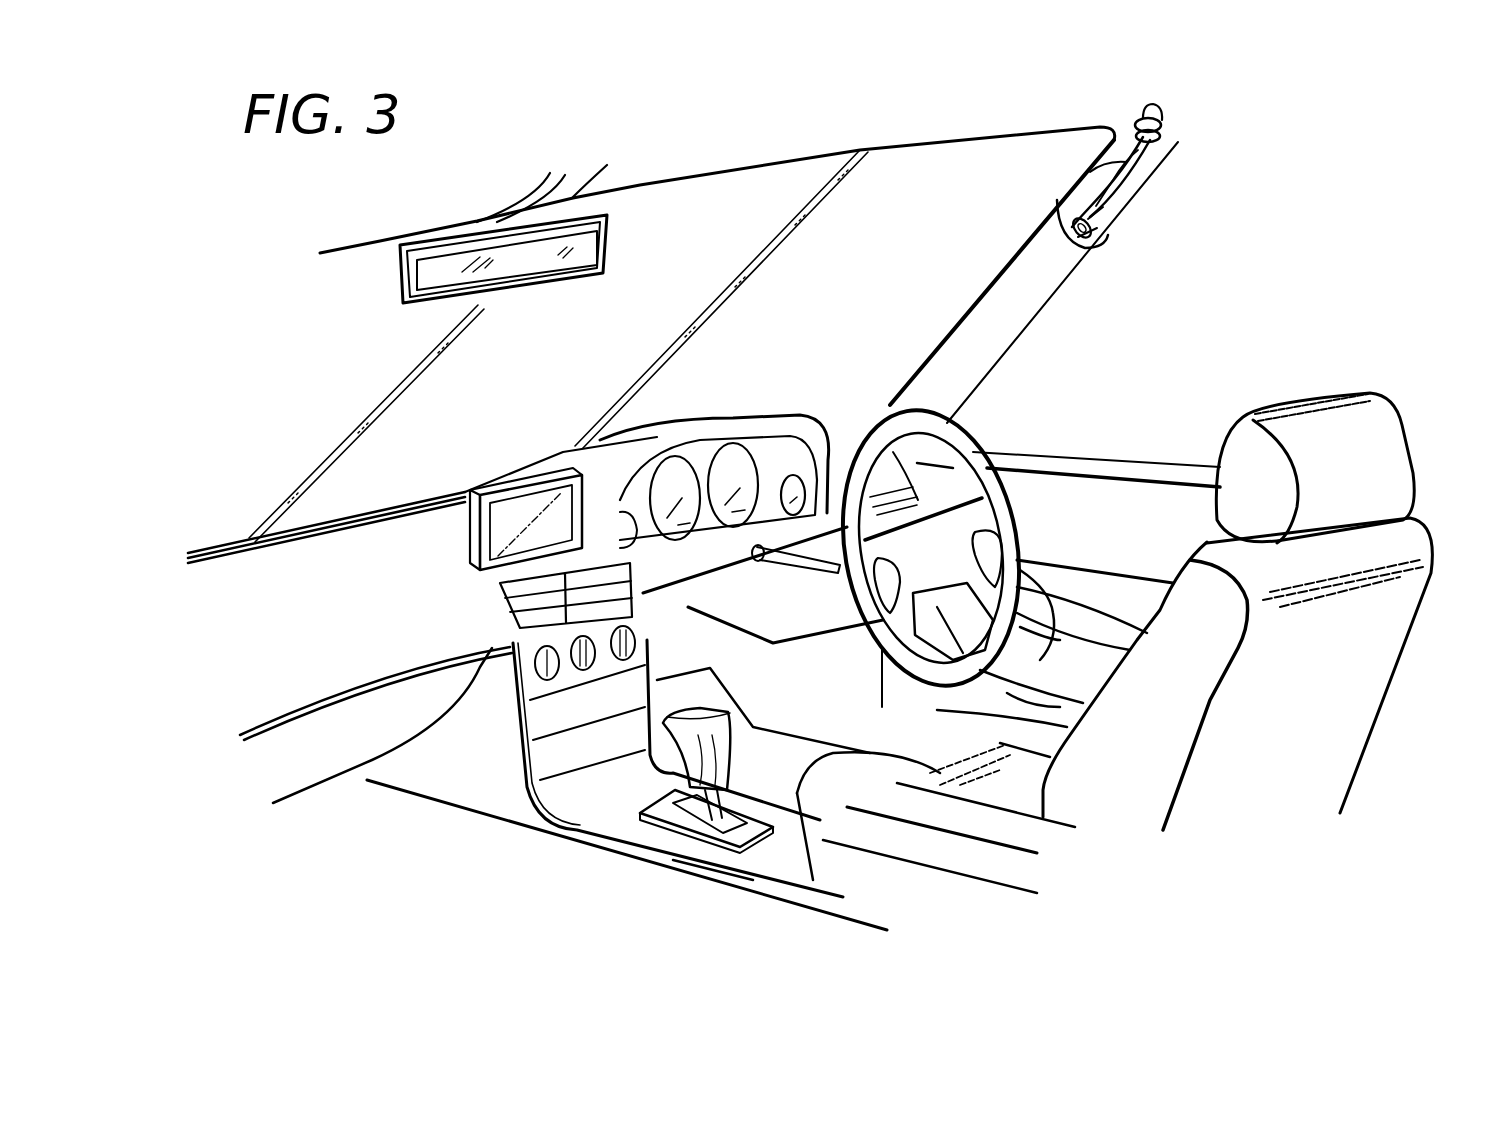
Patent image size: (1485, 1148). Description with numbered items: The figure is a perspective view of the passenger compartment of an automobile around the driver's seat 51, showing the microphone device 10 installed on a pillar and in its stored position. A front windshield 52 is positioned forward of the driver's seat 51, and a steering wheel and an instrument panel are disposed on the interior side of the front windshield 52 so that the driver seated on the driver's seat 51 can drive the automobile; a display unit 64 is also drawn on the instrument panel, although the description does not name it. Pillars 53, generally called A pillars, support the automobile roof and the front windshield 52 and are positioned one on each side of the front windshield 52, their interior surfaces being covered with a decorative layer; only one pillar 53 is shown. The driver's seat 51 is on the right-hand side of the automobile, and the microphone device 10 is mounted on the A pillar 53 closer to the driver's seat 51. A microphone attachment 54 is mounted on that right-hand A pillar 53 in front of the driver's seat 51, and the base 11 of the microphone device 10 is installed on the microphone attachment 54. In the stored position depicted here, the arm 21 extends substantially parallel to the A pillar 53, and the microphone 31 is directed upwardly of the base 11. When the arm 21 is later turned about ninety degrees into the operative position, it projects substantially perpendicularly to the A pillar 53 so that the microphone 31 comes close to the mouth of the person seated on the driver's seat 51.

The microphone device 10 is at (1150, 156).
The base 11 is at (1100, 212).
The arm 21 is at (1110, 160).
The microphone 31 is at (1165, 112).
The driver's seat 51 is at (1207, 552).
The front windshield 52 is at (710, 205).
The pillar 53 is at (1030, 298).
The microphone attachment 54 is at (1050, 205).
The display monitor 64 is at (455, 508).